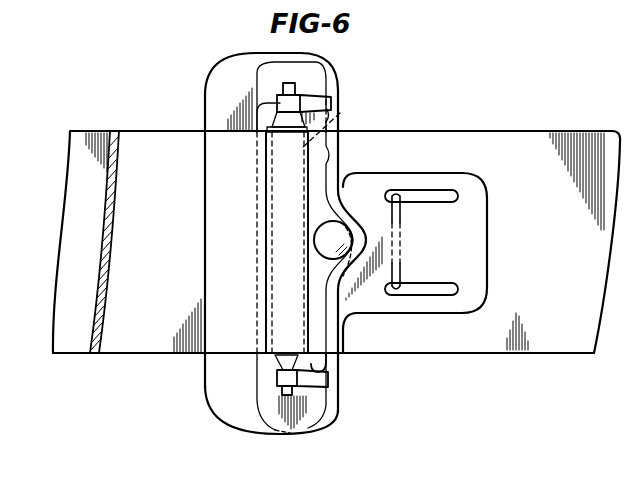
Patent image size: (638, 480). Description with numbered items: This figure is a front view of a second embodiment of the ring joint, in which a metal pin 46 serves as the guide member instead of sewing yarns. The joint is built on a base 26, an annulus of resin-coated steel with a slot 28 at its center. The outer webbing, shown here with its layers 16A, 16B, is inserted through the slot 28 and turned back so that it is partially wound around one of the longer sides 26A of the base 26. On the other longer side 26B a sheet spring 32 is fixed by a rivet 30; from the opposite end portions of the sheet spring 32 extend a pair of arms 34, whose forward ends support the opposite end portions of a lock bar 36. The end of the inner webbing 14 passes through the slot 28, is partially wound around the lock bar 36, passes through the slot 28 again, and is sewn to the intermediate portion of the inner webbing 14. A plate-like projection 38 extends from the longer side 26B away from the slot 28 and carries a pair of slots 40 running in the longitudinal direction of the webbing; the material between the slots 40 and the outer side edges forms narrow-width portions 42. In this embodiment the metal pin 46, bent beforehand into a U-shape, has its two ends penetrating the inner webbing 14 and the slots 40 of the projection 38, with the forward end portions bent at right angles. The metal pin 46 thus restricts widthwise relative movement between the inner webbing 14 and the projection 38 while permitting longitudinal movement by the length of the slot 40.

The inner webbing 14 is at (532, 141).
The panel inner layer 16A is at (135, 342).
The panel outer layer 16B is at (77, 342).
The base 26 is at (238, 421).
The one of the longer sides of the base 26A is at (204, 378).
The other of the longer sides of the base 26B is at (341, 337).
The slot 28 is at (257, 363).
The rivet 30 is at (343, 227).
The sheet spring 32 is at (325, 370).
The arms 34 is at (316, 101).
The lock bar 36 is at (340, 113).
The plate-like projection 38 is at (480, 238).
The slots 40 is at (445, 203).
The narrow-width portions 42 is at (422, 176).
The metal pin 46 is at (400, 266).